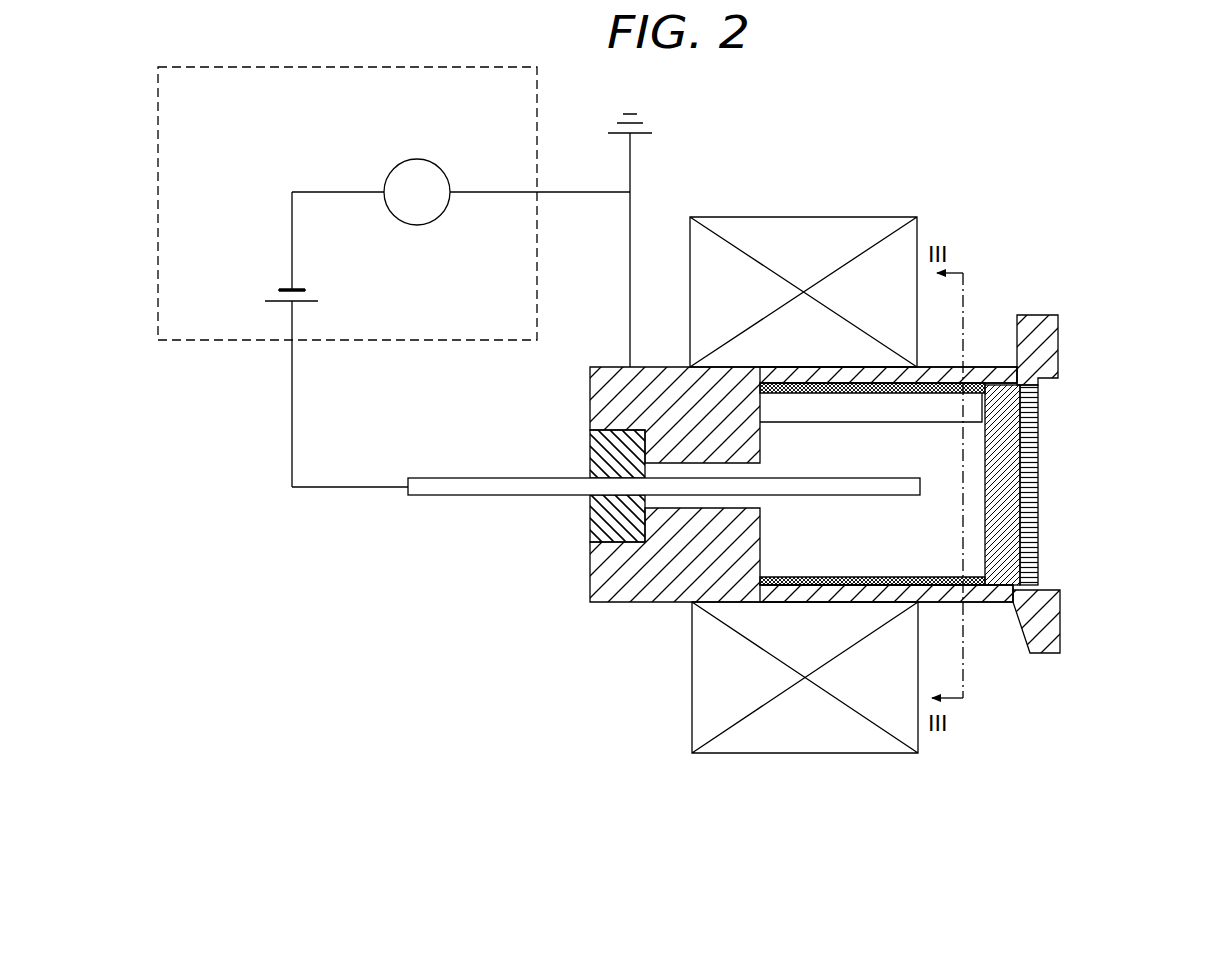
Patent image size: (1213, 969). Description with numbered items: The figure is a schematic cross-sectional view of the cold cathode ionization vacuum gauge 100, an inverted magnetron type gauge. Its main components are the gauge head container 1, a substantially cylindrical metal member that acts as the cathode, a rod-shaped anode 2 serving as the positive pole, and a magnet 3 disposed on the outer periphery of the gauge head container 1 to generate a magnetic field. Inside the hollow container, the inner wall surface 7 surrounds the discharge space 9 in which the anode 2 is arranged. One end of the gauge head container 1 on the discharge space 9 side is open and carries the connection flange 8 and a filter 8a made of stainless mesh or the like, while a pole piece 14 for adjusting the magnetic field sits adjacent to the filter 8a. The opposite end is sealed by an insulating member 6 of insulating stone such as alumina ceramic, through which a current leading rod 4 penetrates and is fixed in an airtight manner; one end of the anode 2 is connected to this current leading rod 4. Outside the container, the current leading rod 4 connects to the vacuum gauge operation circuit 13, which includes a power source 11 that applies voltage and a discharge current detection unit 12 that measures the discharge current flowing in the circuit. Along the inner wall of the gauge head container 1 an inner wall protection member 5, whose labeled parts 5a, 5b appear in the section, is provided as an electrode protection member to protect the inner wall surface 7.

The gauge head container 1 is at (614, 598).
The anode 2 is at (830, 497).
The magnet 3 is at (822, 215).
The current leading rod 4 is at (436, 499).
The inner wall protection member 5 is at (975, 442).
The plate 5a is at (948, 378).
The inner layer 5b is at (968, 392).
The insulating member 6 is at (590, 527).
The inner wall surface 7 is at (944, 598).
The connection flange 8 is at (1060, 620).
The filter 8a is at (1040, 482).
The discharge space 9 is at (948, 543).
The power source 11 is at (278, 292).
The discharge current detection unit 12 is at (438, 160).
The vacuum gauge operation circuit 13 is at (402, 342).
The pole piece 14 is at (1040, 433).
The cold cathode ionization vacuum gauge 100 is at (924, 183).